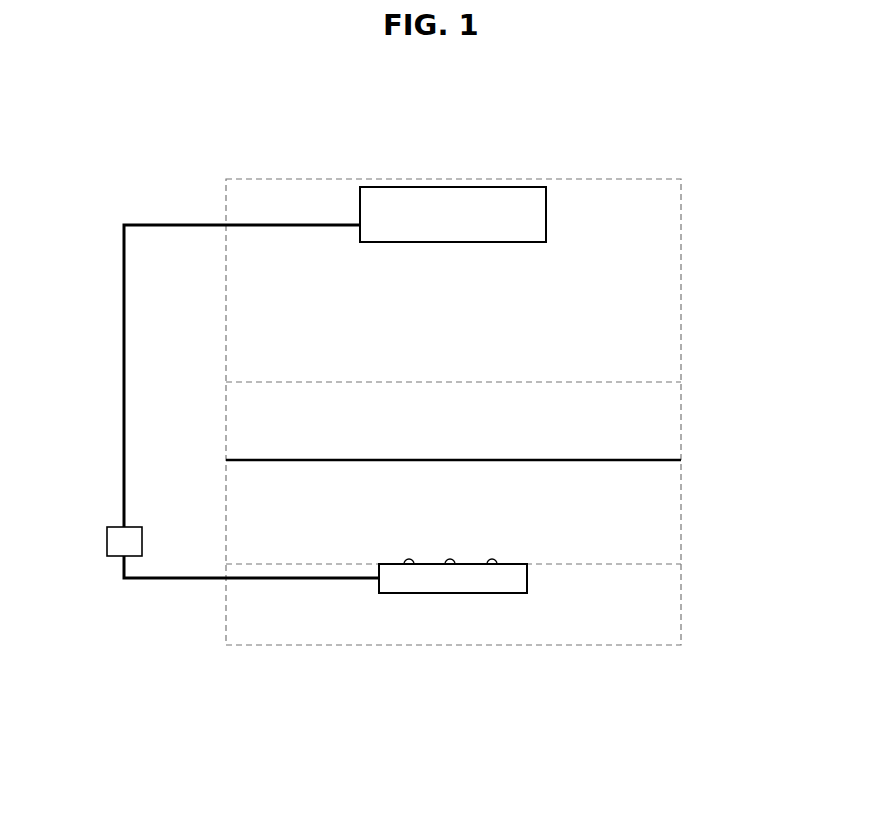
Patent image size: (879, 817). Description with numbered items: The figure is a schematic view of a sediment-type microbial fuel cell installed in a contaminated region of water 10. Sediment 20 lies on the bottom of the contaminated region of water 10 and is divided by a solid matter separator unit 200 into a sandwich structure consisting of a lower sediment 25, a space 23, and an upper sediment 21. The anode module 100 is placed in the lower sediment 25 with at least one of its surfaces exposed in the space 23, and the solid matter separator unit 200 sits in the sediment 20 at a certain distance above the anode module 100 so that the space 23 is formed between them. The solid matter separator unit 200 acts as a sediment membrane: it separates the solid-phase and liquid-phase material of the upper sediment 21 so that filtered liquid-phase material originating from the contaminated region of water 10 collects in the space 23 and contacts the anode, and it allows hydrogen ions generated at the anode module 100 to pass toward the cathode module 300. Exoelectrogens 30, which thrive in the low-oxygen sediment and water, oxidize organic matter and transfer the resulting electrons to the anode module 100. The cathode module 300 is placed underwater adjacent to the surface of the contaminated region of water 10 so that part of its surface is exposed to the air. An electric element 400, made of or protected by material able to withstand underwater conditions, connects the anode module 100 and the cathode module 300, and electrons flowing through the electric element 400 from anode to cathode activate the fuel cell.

The contaminated region of water 10 is at (612, 175).
The sediment 20 is at (480, 490).
The upper sediment 21 is at (665, 421).
The space 23 is at (252, 508).
The lower sediment 25 is at (665, 589).
The exoelectrogens 30 is at (410, 560).
The anode module 100 is at (500, 571).
The solid matter separator unit 200 is at (276, 461).
The cathode module 300 is at (546, 212).
The electric element 400 is at (107, 541).